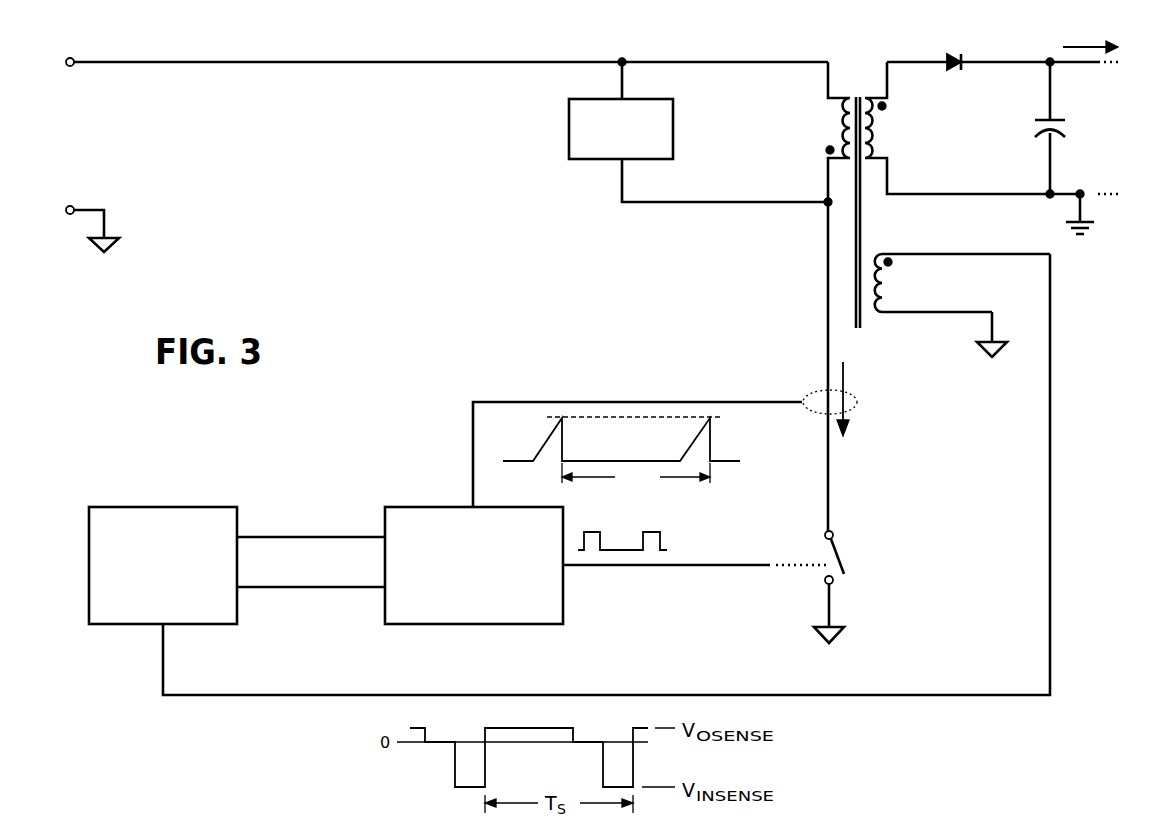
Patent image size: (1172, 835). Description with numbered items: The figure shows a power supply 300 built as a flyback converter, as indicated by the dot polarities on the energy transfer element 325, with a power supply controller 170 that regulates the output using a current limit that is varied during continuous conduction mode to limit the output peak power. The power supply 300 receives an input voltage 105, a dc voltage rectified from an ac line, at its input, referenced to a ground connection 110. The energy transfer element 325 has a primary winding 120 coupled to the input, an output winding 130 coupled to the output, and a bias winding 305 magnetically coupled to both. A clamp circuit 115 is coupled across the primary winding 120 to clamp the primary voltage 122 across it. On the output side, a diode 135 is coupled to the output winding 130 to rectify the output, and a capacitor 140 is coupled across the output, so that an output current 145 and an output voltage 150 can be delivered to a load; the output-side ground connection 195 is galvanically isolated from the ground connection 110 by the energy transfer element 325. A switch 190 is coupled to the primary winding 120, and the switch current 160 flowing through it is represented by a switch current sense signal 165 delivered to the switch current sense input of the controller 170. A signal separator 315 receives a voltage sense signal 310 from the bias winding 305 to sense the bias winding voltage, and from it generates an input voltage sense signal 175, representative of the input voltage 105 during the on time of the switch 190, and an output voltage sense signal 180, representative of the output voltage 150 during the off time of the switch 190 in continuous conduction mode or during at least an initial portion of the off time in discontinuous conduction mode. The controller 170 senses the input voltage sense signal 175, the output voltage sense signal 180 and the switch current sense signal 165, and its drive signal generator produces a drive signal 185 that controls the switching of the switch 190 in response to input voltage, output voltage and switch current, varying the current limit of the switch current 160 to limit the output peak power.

The power supply 300 is at (372, 251).
The input voltage VIN 105 is at (97, 142).
The ground connection 110 is at (117, 231).
The clamp circuit 115 is at (562, 137).
The primary winding 120 is at (827, 131).
The voltage VP 122 is at (751, 114).
The energy transfer element T1 325 is at (862, 228).
The output winding 130 is at (888, 129).
The diode D1 135 is at (955, 79).
The capacitor C1 140 is at (1043, 108).
The output current IO 145 is at (1077, 39).
The output voltage VO 150 is at (1092, 119).
The ground connection 195 is at (1098, 227).
The bias winding 305 is at (888, 291).
The voltage sense signal 310 is at (1058, 362).
The switch current IS1 160 is at (855, 365).
The switch current sense signal 165 is at (665, 440).
The power supply controller 170 is at (442, 500).
The input voltage sense signal VINSENSE 175 is at (313, 507).
The output voltage sense signal VOSENSE 180 is at (319, 593).
The drive signal 185 is at (708, 558).
The switch S1 190 is at (848, 532).
The signal separator 315 is at (172, 500).